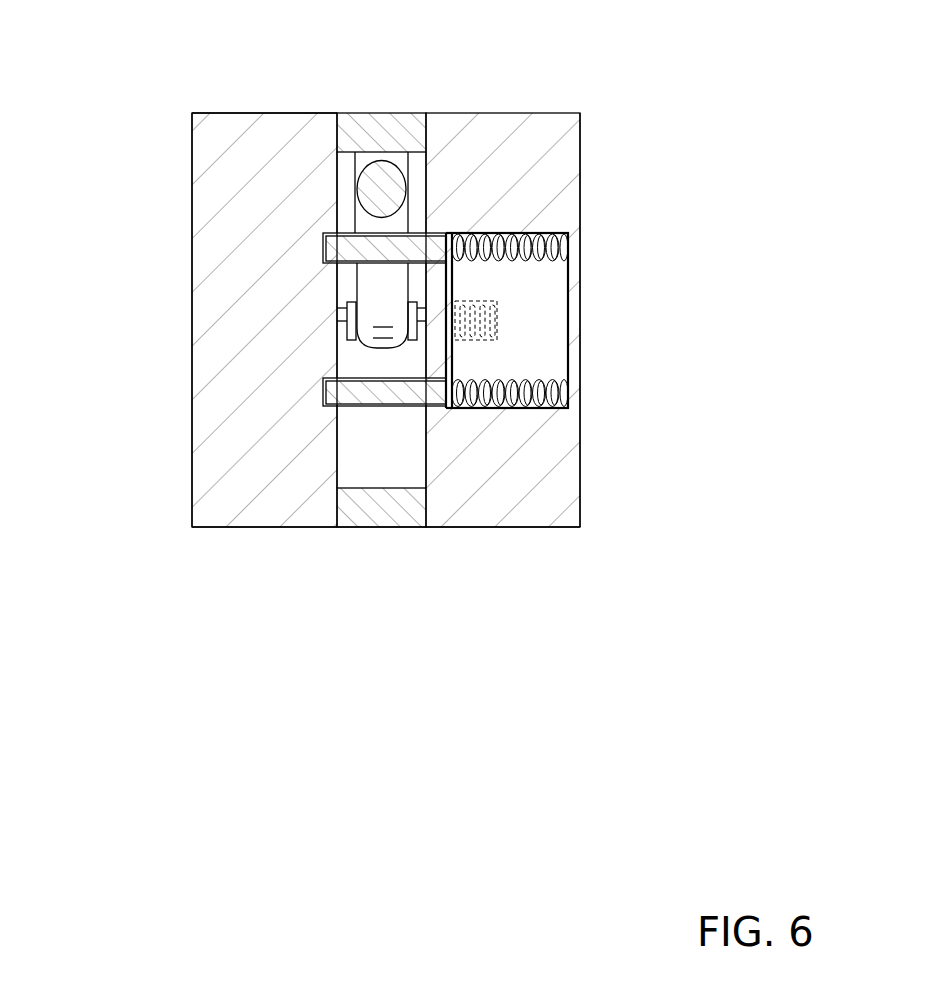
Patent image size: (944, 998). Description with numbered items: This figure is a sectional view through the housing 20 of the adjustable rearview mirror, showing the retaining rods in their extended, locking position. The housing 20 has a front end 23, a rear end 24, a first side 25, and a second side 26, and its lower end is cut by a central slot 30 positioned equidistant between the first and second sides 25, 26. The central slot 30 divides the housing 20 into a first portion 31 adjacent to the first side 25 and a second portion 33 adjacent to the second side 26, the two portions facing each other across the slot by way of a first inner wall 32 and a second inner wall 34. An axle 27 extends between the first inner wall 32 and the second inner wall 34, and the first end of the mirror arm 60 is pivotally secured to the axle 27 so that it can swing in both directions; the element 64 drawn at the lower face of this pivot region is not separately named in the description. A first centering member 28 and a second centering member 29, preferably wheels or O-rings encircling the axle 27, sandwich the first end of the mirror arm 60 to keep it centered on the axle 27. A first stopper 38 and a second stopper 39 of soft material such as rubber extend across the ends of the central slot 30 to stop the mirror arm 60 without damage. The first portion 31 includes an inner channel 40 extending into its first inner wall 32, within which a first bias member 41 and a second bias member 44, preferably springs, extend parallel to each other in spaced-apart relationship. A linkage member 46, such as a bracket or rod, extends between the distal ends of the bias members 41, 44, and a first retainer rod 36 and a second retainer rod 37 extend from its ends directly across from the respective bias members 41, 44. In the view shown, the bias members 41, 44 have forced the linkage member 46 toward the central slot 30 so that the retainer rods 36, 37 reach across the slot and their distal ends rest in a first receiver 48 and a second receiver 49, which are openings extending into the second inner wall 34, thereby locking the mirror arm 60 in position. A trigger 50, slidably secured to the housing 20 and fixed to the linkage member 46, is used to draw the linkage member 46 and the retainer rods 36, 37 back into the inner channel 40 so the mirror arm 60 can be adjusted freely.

The housing 20 is at (192, 330).
The front end 23 is at (498, 527).
The rear end 24 is at (257, 113).
The first side 25 is at (580, 445).
The second side 26 is at (192, 490).
The axle 27 is at (336, 299).
The first centering member 28 is at (410, 344).
The second centering member 29 is at (347, 320).
The central slot 30 is at (368, 445).
The first portion 31 is at (533, 493).
The first inner wall 32 is at (423, 172).
The second portion 33 is at (248, 226).
The second inner wall 34 is at (338, 203).
The first retainer rod 36 is at (350, 247).
The second retainer rod 37 is at (365, 395).
The first stopper 38 is at (355, 517).
The second stopper 39 is at (425, 197).
The inner channel 40 is at (545, 300).
The first bias member 41 is at (543, 262).
The second bias member 44 is at (551, 398).
The linkage member 46 is at (453, 353).
The first receiver 48 is at (324, 250).
The second receiver 49 is at (322, 386).
The trigger 50 is at (497, 320).
The mirror arm 60 is at (382, 185).
The valve seat 64 is at (380, 348).